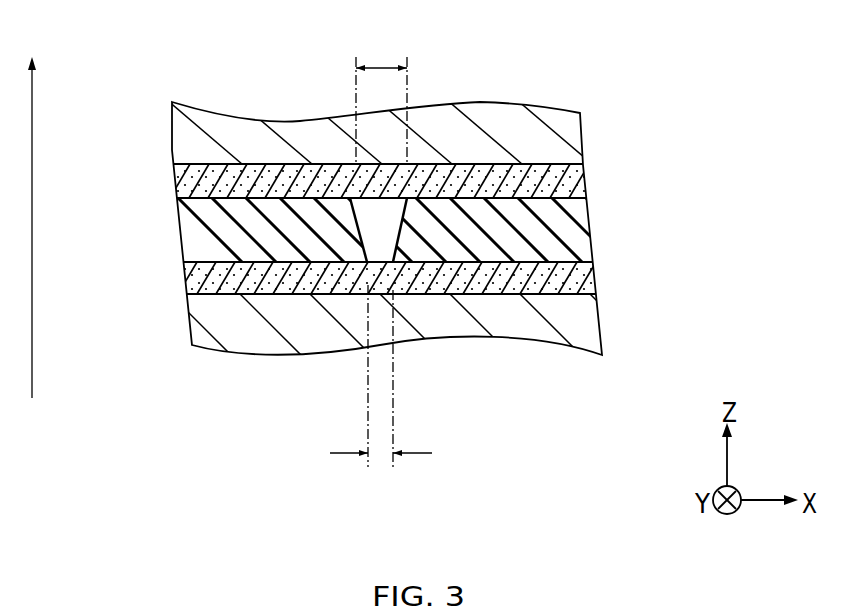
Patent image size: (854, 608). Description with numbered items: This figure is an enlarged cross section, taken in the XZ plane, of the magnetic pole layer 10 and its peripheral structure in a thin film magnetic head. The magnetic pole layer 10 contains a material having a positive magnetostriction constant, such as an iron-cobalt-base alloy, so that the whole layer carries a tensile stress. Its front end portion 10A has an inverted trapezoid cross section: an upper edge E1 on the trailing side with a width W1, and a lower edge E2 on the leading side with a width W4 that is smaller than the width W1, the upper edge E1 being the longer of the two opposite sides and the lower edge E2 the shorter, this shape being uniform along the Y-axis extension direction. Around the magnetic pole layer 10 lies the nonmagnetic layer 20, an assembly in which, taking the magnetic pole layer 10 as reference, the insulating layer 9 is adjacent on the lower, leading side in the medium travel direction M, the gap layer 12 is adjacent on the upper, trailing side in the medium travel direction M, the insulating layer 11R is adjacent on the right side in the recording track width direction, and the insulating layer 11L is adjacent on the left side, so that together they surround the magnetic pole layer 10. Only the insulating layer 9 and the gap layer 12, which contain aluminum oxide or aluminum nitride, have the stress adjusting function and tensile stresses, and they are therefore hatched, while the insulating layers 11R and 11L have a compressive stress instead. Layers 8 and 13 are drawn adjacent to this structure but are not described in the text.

The piezoelectric layer 8 is at (522, 318).
The insulating layer 9 is at (440, 285).
The magnetic pole layer 10 is at (346, 131).
The front end portion 10A is at (372, 207).
The insulating layer 11L is at (218, 248).
The insulating layer 11R is at (567, 250).
The gap layer 12 is at (242, 164).
The piezoelectric layer 13 is at (533, 133).
The nonmagnetic layer 20 is at (407, 232).
The upper edge E1 is at (365, 242).
The lower edge E2 is at (380, 265).
The width W1 is at (379, 66).
The width W4 is at (379, 456).
The medium travel direction M is at (34, 353).